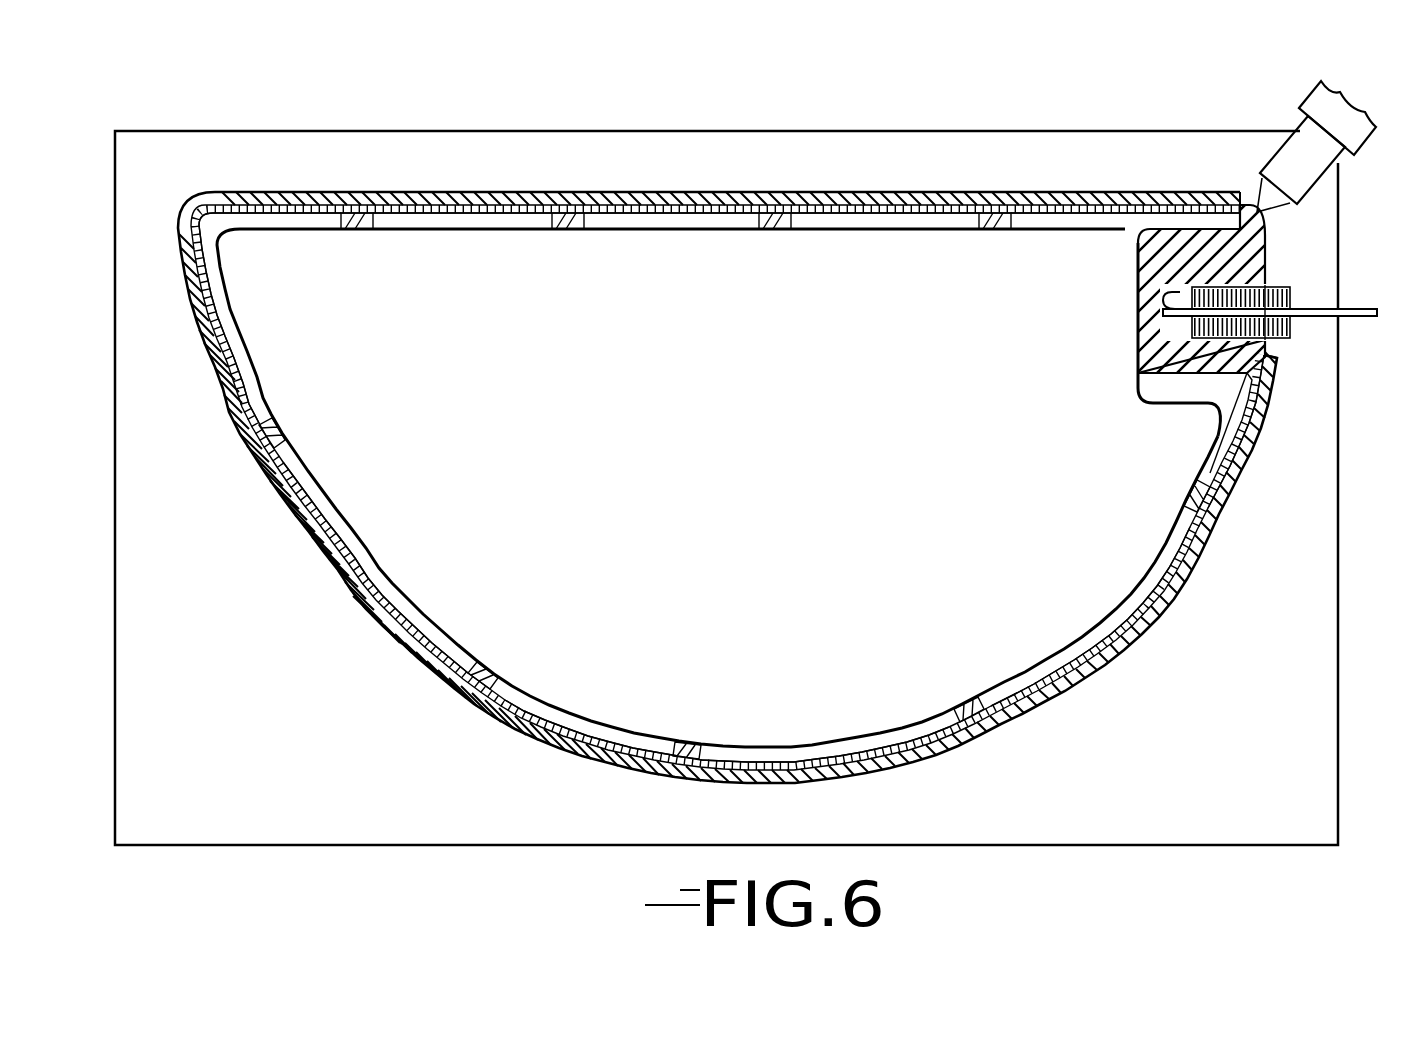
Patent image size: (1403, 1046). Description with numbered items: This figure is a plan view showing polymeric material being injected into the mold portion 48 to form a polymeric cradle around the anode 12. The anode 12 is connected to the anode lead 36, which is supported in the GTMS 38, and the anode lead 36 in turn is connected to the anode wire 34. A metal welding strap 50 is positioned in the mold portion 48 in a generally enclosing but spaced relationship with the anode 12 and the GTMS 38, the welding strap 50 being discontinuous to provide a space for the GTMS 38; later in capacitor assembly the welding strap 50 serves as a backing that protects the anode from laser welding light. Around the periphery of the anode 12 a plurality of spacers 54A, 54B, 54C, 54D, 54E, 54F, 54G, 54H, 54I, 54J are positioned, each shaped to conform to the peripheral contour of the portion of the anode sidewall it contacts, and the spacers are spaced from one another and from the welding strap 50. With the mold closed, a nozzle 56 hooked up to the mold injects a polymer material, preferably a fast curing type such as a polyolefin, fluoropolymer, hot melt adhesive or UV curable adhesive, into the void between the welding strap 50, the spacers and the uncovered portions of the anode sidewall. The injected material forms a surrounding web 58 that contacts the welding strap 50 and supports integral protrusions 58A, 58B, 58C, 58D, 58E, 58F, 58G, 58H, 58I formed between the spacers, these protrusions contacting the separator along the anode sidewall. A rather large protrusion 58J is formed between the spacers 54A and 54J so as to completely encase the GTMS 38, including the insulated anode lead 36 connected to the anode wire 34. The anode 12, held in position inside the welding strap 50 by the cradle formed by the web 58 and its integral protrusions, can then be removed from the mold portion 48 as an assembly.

The anode 12 is at (947, 265).
The mold portion 48 is at (678, 158).
The surrounding web 58 is at (832, 205).
The protrusion 58A is at (1000, 229).
The protrusion 58B is at (773, 229).
The protrusion 58C is at (561, 229).
The protrusion 58D is at (356, 229).
The protrusion 58E is at (280, 440).
The protrusion 58F is at (488, 670).
The protrusion 58G is at (688, 745).
The protrusion 58H is at (970, 713).
The protrusion 58I is at (1203, 500).
The protrusion 58J is at (1152, 270).
The spacer 54A is at (1060, 229).
The spacer 54B is at (877, 229).
The spacer 54C is at (670, 229).
The spacer 54D is at (492, 229).
The spacer 54E is at (253, 229).
The spacer 54F is at (370, 570).
The spacer 54G is at (565, 710).
The spacer 54H is at (820, 748).
The spacer 54I is at (1107, 622).
The spacer 54J is at (1190, 387).
The anode wire 34 is at (1137, 334).
The anode lead 36 is at (1378, 312).
The GTMS 38 is at (1296, 268).
The welding strap 50 is at (1280, 403).
The nozzle 56 is at (1332, 125).